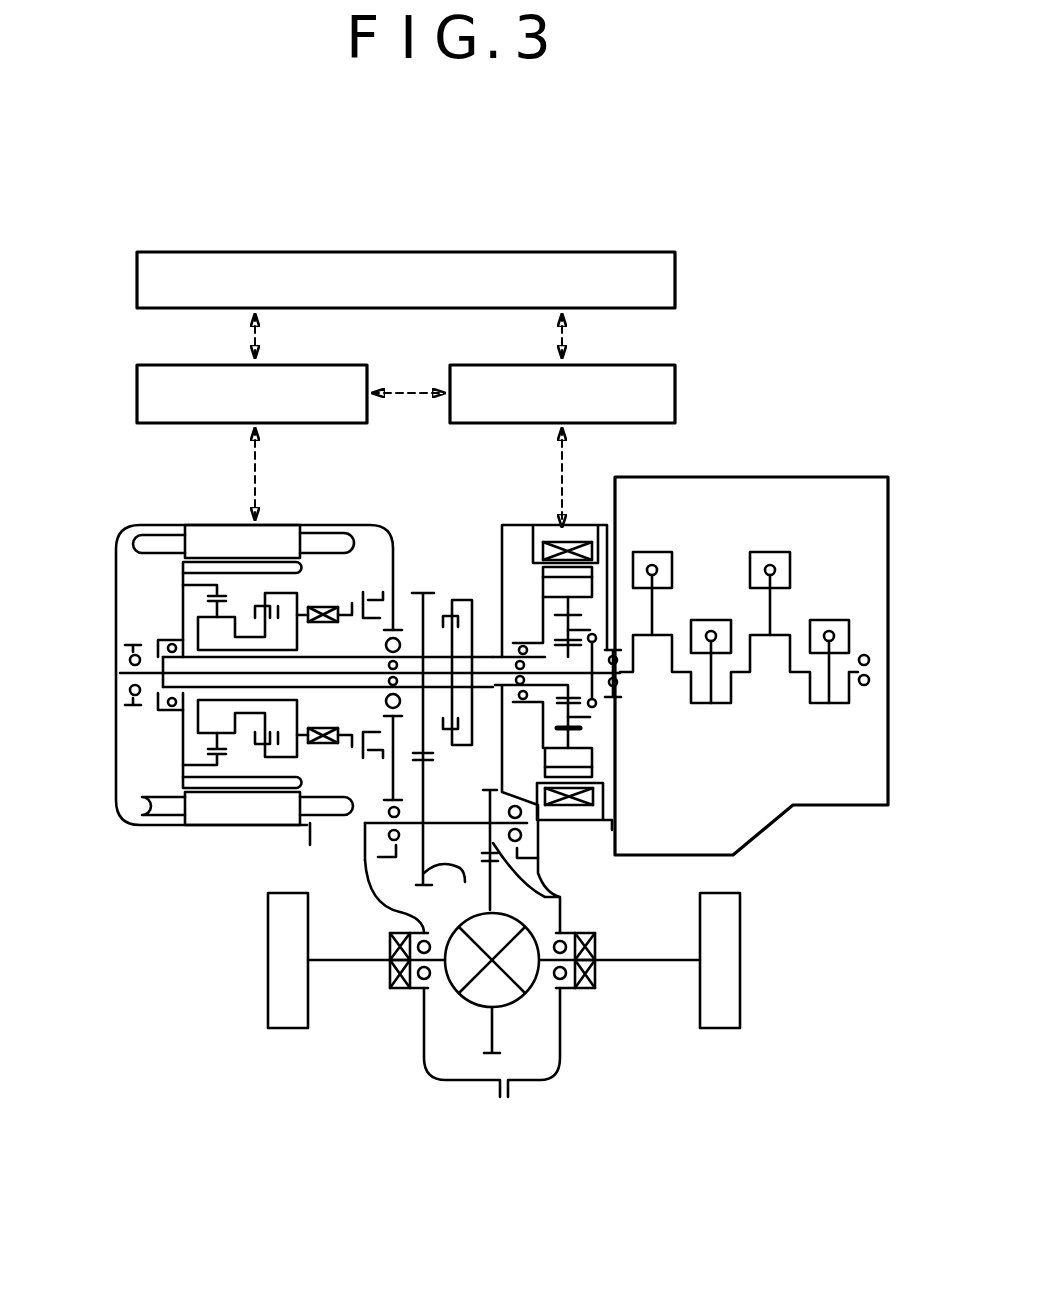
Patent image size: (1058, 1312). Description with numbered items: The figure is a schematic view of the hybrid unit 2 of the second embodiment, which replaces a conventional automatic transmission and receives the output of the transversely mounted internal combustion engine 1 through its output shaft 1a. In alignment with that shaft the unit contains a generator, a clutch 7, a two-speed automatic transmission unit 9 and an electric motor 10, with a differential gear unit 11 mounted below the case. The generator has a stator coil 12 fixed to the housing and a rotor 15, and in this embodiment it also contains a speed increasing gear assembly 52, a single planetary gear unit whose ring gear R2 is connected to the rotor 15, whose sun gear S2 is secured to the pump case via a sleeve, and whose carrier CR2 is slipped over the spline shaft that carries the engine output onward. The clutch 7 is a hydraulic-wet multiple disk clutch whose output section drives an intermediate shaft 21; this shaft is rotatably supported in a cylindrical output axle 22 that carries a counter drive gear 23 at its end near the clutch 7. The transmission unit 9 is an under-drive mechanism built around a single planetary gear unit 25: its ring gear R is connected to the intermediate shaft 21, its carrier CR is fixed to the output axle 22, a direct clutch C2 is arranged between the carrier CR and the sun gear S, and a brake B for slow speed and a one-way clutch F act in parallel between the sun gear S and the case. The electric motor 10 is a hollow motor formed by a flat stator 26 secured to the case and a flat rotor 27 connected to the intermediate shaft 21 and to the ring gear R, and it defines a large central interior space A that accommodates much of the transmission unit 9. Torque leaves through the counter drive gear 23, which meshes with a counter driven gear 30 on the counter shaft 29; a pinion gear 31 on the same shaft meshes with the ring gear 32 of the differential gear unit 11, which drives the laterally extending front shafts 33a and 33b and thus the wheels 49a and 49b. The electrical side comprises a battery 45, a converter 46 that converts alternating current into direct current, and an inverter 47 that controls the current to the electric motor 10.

The internal combustion engine 1 is at (729, 627).
The output shaft 1a is at (633, 672).
The hybrid unit 2 is at (337, 669).
The clutch 7 is at (469, 590).
The two-speed automatic transmission unit 9 is at (380, 556).
The electric motor 10 is at (224, 669).
The differential gear unit 11 is at (475, 996).
The stator coil 12 is at (580, 651).
The rotor 15 is at (540, 588).
The intermediate shaft 21 is at (150, 668).
The output axle 22 is at (160, 640).
The counter drive gear 23 is at (415, 600).
The planetary gear unit 25 is at (163, 594).
The stator 26 is at (213, 537).
The rotor 27 is at (336, 548).
The counter shaft 29 is at (452, 822).
The counter driven gear 30 is at (474, 852).
The pinion gear 31 is at (560, 897).
The ring gear 32 is at (478, 1040).
The front shaft 33a is at (338, 965).
The front shaft 33b is at (642, 965).
The battery 45 is at (676, 272).
The converter 46 is at (655, 362).
The inverter 47 is at (186, 364).
The wheel 49a is at (290, 1030).
The wheel 49b is at (722, 1030).
The speed increasing gear assembly 52 is at (592, 730).
The sun gear S is at (207, 698).
The carrier CR is at (200, 722).
The ring gear R is at (200, 758).
The direct clutch C2 is at (258, 735).
The central interior space A is at (283, 762).
The one-way clutch F is at (313, 744).
The brake B is at (352, 745).
The ring gear R2 is at (572, 622).
The carrier CR2 is at (570, 630).
The sun gear S2 is at (570, 650).